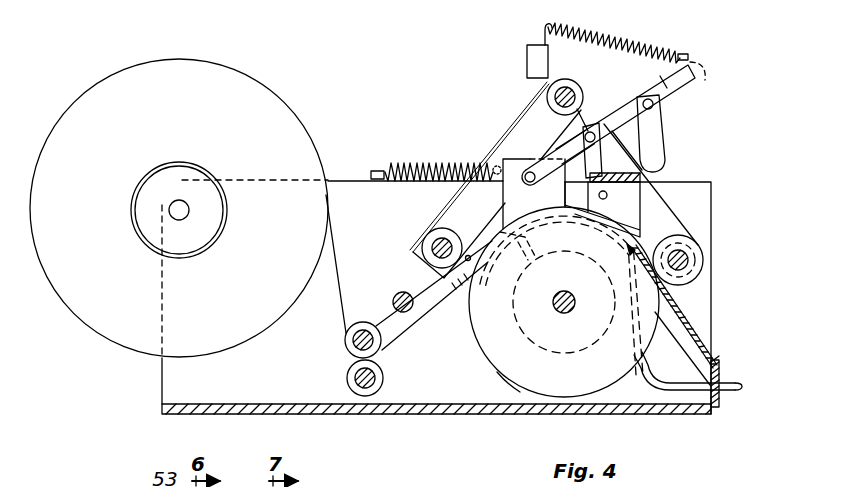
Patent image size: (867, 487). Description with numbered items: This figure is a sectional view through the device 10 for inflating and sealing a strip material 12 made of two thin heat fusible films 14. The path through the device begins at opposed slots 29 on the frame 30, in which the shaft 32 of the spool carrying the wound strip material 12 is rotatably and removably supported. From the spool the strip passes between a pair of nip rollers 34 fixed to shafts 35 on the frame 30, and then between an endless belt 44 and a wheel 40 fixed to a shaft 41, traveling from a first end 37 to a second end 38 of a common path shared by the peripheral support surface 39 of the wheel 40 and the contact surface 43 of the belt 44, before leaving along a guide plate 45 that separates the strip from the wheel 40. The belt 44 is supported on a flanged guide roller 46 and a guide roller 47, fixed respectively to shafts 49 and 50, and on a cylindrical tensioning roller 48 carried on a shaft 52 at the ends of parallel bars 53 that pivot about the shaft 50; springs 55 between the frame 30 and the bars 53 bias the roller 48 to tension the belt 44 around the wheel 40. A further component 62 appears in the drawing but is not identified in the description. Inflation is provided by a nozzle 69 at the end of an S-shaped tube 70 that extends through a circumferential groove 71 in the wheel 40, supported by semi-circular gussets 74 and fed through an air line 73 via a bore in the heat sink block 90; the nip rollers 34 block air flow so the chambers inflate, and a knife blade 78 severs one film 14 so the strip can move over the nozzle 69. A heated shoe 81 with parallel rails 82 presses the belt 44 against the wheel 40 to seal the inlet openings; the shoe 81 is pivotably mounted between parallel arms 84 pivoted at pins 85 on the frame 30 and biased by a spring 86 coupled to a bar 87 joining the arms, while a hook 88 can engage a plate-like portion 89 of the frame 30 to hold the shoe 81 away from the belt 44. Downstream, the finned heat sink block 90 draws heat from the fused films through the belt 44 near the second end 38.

The device 10 is at (716, 180).
The strip material 12 is at (288, 110).
The films 14 is at (337, 285).
The slots 29 is at (182, 178).
The frame 30 is at (172, 384).
The shaft 32 is at (183, 220).
The nip rollers 34 is at (360, 322).
The shafts 35 is at (353, 360).
The first end 37 is at (478, 270).
The second end 38 is at (629, 252).
The peripheral support surface 39 is at (498, 373).
The wheel 40 is at (560, 382).
The shaft 41 is at (564, 313).
The contact surface 43 is at (468, 254).
The endless belt 44 is at (452, 207).
The guide plate 45 is at (716, 351).
The flanged guide roller 46 is at (705, 266).
The guide roller 47 is at (428, 244).
The cylindrical tensioning roller 48 is at (580, 93).
The shaft 49 is at (690, 258).
The shaft 50 is at (432, 258).
The shaft 52 is at (548, 98).
The parallel bars 53 is at (535, 138).
The springs 55 is at (437, 166).
The roller 62 is at (401, 296).
The nozzle 69 is at (452, 284).
The S-shaped tube 70 is at (740, 394).
The circumferential groove 71 is at (519, 332).
The air line 73 is at (603, 191).
The semi-circular gussets 74 is at (678, 372).
The knife blade 78 is at (528, 262).
The heated shoe 81 is at (508, 191).
The parallel rails 82 is at (539, 210).
The parallel arms 84 is at (662, 84).
The pins 85 is at (600, 119).
The spring 86 is at (654, 43).
The bar 87 is at (705, 84).
The hook 88 is at (660, 125).
The plate-like portion 89 is at (615, 199).
The heat sink block 90 is at (640, 213).